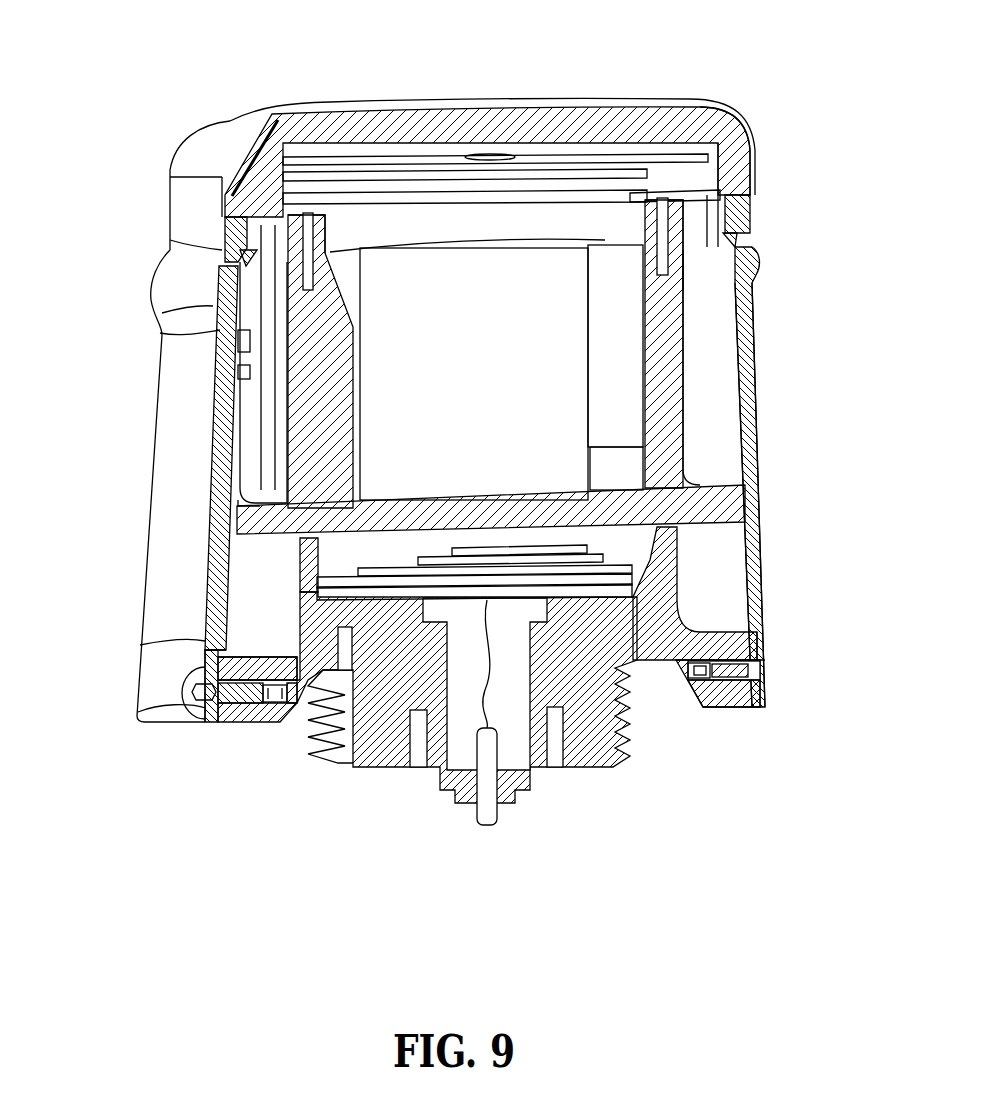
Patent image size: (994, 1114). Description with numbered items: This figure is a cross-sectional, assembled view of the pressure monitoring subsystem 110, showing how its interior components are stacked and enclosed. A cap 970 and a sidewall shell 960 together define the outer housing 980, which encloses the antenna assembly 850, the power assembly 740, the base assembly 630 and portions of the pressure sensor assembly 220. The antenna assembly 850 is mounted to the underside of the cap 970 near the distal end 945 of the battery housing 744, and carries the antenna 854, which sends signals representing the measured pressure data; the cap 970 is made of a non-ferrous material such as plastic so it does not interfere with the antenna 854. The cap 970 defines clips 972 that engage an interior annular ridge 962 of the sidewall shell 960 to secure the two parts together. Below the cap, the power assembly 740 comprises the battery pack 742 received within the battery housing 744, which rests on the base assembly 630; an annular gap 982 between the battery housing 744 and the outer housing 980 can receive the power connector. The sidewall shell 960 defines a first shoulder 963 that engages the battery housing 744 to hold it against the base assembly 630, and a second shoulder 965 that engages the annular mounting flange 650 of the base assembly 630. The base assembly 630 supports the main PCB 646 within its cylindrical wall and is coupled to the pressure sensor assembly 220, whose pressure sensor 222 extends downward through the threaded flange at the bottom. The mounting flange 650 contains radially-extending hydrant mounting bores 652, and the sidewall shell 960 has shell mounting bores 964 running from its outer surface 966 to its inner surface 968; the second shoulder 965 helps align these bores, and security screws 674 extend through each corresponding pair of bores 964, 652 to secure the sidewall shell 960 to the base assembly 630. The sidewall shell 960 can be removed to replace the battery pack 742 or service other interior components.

The pressure monitoring subsystem 110 is at (165, 68).
The outer housing 980 is at (155, 140).
The cap 970 is at (672, 123).
The distal end 945 is at (748, 160).
The antenna assembly 850 is at (345, 165).
The antenna 854 is at (497, 152).
The interior annular ridge 962 is at (240, 230).
The clips 972 is at (245, 258).
The sidewall shell 960 is at (757, 373).
The outer surface 966 is at (768, 418).
The inner surface 968 is at (725, 448).
The annular gap 982 is at (714, 368).
The power assembly 740 is at (672, 300).
The battery housing 744 is at (245, 330).
The battery pack 742 is at (400, 415).
The first shoulder 963 is at (232, 495).
The second shoulder 965 is at (205, 638).
The base assembly 630 is at (675, 560).
The main PCB 646 is at (300, 715).
The pressure sensor 222 is at (480, 822).
The pressure sensor assembly 220 is at (357, 590).
The annular mounting flange 650 is at (224, 728).
The hydrant mounting bores 652 is at (248, 703).
The shell mounting bores 964 is at (213, 722).
The security screws 674 is at (185, 680).